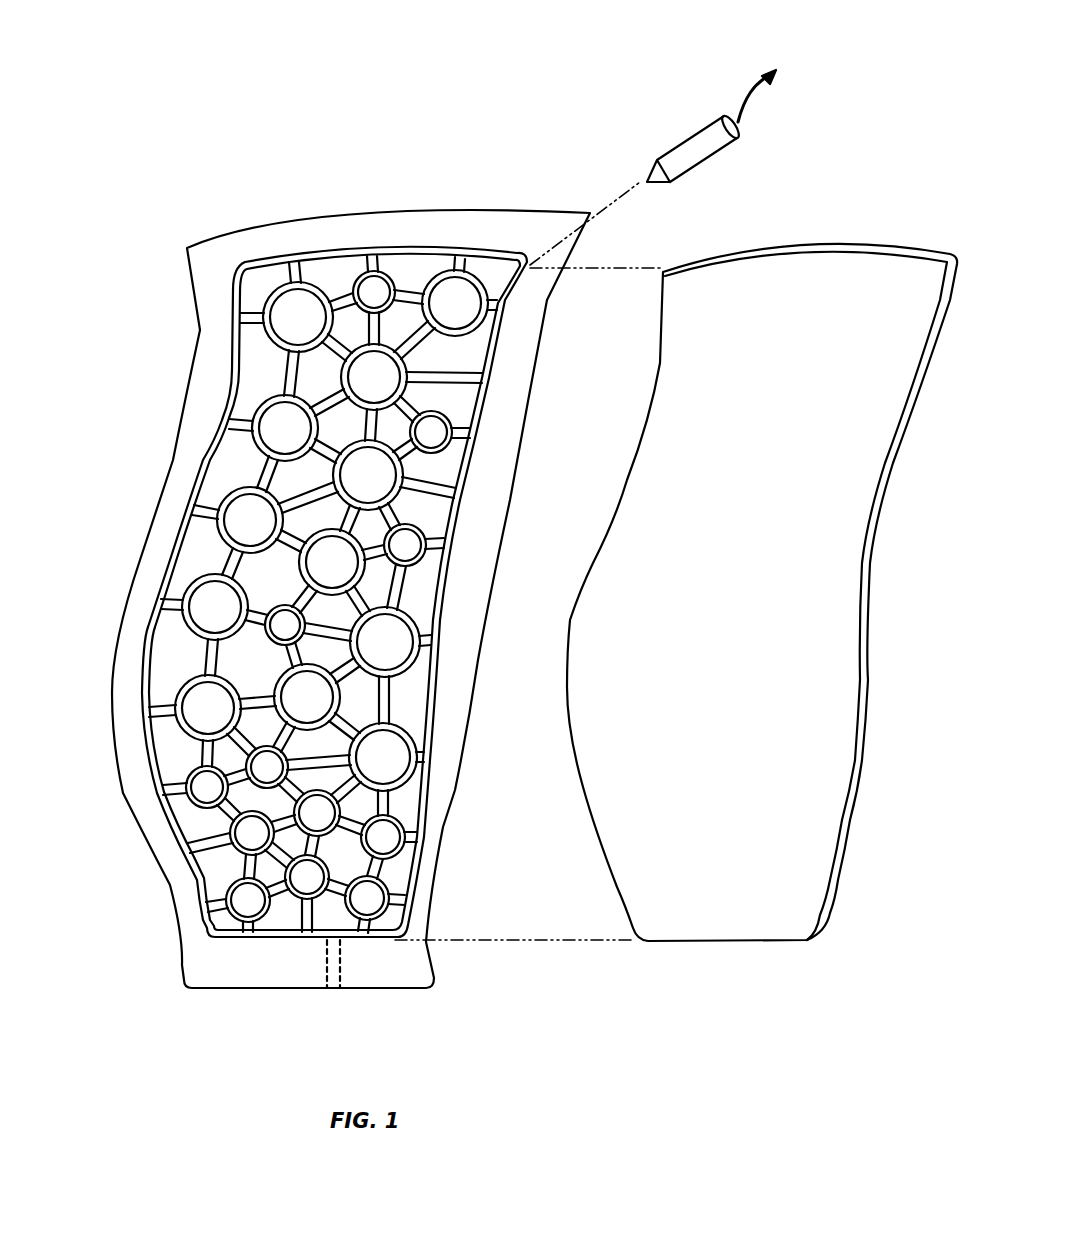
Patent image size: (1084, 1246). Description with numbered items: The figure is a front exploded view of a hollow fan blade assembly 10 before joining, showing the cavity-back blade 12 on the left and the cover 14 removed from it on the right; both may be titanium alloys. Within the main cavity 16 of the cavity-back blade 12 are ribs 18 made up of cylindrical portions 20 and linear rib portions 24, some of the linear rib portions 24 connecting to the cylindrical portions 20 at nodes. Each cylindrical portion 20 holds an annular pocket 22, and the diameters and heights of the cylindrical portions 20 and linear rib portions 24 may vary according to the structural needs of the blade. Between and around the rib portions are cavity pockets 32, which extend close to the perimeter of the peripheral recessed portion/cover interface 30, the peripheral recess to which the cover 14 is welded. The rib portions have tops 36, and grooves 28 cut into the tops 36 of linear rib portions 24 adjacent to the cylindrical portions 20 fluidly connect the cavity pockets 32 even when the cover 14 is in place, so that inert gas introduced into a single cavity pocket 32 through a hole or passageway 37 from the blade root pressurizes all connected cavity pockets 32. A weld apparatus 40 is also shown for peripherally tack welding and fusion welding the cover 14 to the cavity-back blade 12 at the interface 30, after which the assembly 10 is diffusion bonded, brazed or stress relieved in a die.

The hollow fan blade assembly 10 is at (621, 160).
The cavity-back blade 12 is at (485, 205).
The cover 14 is at (820, 240).
The main cavity 16 is at (425, 511).
The ribs 18 is at (405, 688).
The cylindrical portions 20 is at (178, 687).
The annular pockets 22 is at (443, 300).
The linear rib portions 24 is at (228, 819).
The grooves 28 is at (247, 428).
The peripheral recessed portion/cover interface 30 is at (505, 293).
The cavity pockets 32 is at (257, 283).
The tops 36 is at (207, 510).
The hole or passageway 37 is at (318, 968).
The weld apparatus 40 is at (683, 128).